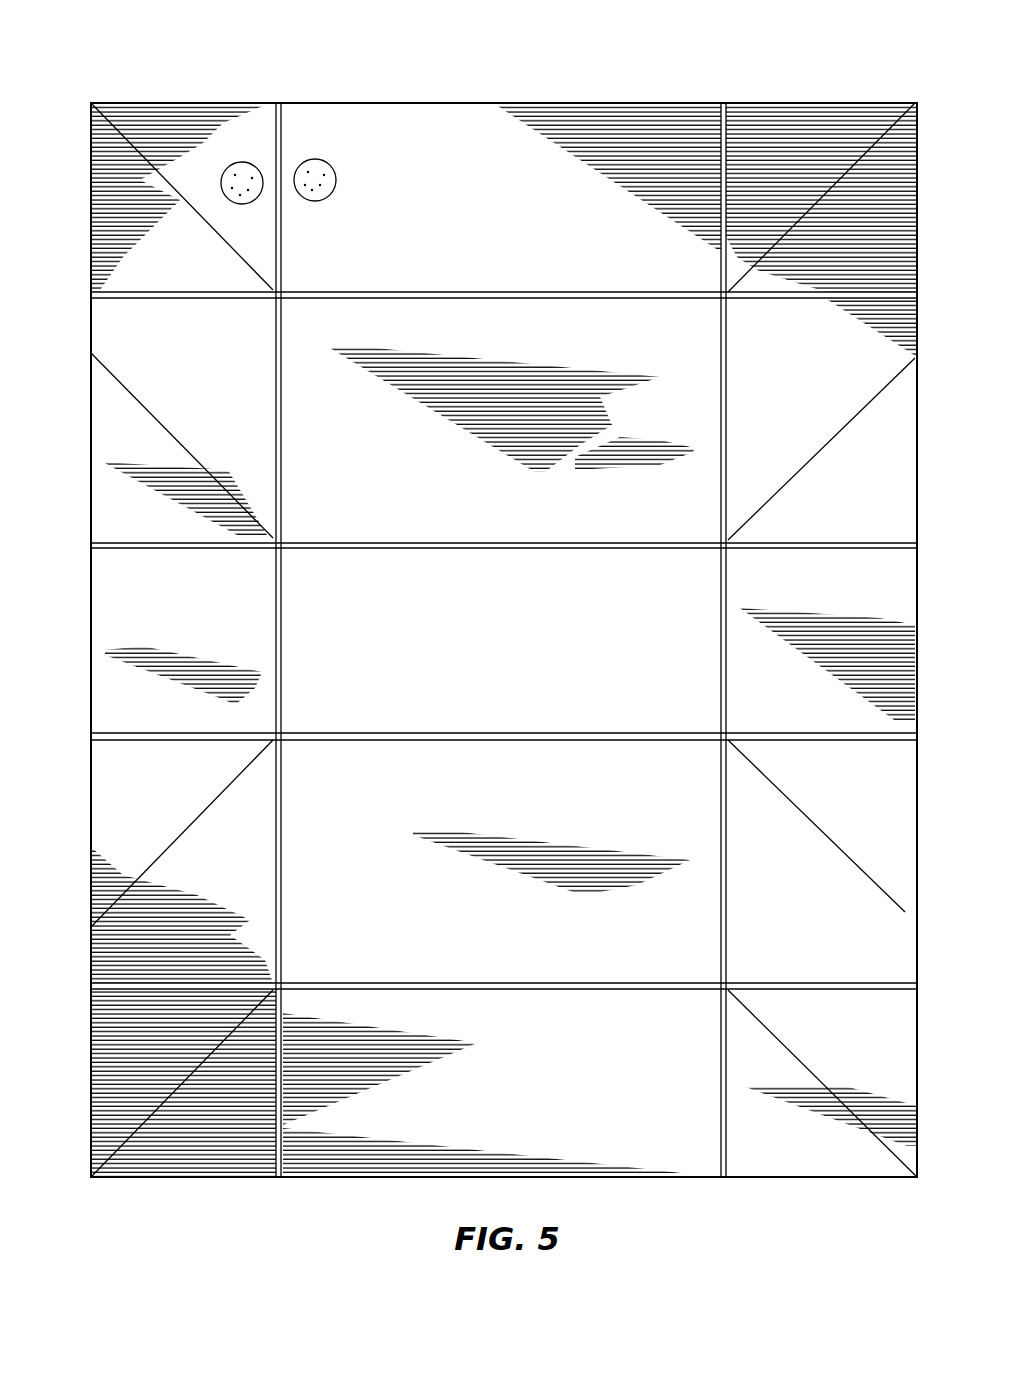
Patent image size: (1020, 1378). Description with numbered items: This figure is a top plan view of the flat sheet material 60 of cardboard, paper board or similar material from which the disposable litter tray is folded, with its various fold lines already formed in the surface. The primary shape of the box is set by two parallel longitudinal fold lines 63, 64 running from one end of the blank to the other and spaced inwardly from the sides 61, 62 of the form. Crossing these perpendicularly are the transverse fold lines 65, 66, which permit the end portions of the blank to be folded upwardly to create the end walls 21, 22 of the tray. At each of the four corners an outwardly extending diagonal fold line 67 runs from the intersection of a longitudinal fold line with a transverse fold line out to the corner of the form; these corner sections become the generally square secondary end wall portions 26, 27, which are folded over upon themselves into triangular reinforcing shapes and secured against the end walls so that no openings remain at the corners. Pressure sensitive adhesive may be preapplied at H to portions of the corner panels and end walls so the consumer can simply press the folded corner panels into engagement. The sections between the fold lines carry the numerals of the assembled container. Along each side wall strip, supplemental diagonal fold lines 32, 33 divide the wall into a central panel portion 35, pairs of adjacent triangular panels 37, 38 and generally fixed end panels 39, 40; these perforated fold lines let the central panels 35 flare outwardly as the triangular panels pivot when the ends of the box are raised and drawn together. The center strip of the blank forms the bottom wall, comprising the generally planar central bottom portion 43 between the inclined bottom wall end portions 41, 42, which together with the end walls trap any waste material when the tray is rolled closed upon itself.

The sheet material 60 is at (468, 92).
The side of the form 61 is at (91, 686).
The side of the form 62 is at (918, 596).
The longitudinal fold line 63 is at (284, 112).
The longitudinal fold line 64 is at (722, 100).
The transverse fold line 65 is at (445, 297).
The transverse fold line 66 is at (527, 988).
The diagonal fold lines 67 is at (154, 150).
The secondary end wall portion 26 is at (147, 272).
The secondary end wall portion 27 is at (860, 227).
The end wall 22 is at (463, 219).
The end wall 21 is at (495, 1062).
The pressure sensitive adhesive H is at (242, 163).
The end panel 40 is at (183, 356).
The triangular panel 38 is at (113, 519).
The supplemental fold line 33 is at (147, 412).
The inclined bottom wall end portion 42 is at (397, 466).
The central bottom portion 43 is at (487, 639).
The inclined bottom wall end portion 41 is at (485, 817).
The central panel portion 35 is at (162, 604).
The triangular panel 37 is at (135, 792).
The end panel 39 is at (193, 879).
The supplemental fold line 32 is at (160, 853).